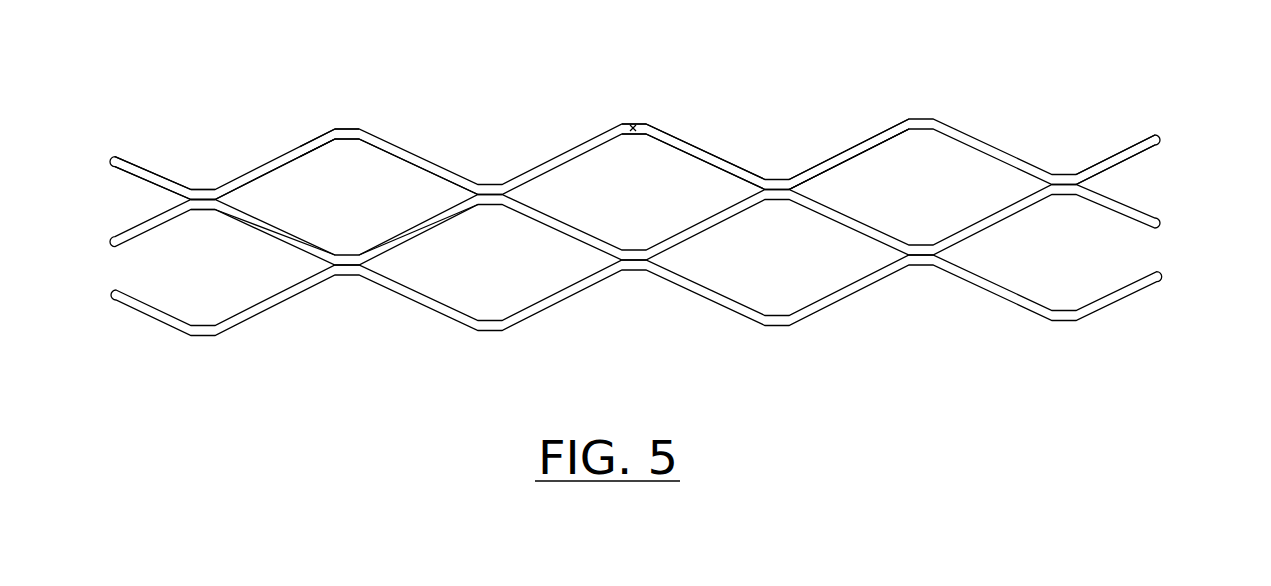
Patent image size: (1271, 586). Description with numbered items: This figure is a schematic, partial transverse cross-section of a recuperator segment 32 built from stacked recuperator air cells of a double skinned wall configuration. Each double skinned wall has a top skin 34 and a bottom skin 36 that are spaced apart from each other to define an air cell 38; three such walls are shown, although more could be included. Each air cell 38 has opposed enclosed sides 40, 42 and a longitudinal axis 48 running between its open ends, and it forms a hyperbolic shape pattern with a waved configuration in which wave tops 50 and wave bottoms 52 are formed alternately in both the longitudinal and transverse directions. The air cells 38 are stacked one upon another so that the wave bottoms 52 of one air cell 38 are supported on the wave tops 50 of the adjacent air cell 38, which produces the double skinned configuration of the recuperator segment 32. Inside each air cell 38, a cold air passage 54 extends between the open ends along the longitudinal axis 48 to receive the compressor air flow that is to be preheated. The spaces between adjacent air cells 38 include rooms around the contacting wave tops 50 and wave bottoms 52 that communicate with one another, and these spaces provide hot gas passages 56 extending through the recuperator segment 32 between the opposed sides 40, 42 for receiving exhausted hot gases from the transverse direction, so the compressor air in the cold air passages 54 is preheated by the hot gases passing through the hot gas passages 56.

The recuperator segment 32 is at (1138, 84).
The top skin 34 is at (877, 135).
The bottom skin 36 is at (863, 152).
The air cell 38 is at (693, 147).
The enclosed side 40 is at (112, 157).
The enclosed side 42 is at (1160, 138).
The longitudinal axis 48 is at (633, 125).
The wave top 50 is at (345, 128).
The wave bottom 52 is at (200, 188).
The cold air passage 54 is at (333, 130).
The hot gas passage 56 is at (360, 217).